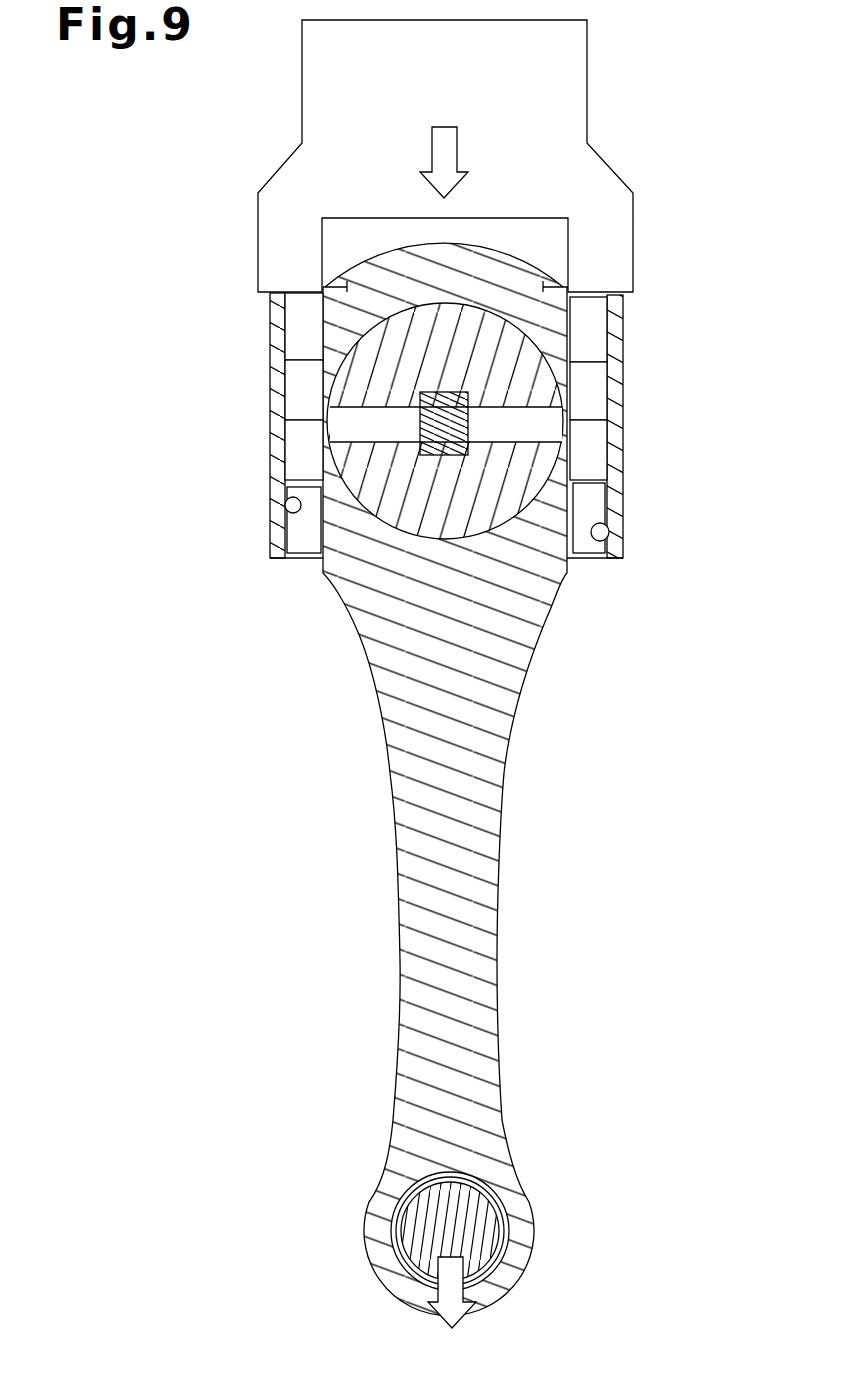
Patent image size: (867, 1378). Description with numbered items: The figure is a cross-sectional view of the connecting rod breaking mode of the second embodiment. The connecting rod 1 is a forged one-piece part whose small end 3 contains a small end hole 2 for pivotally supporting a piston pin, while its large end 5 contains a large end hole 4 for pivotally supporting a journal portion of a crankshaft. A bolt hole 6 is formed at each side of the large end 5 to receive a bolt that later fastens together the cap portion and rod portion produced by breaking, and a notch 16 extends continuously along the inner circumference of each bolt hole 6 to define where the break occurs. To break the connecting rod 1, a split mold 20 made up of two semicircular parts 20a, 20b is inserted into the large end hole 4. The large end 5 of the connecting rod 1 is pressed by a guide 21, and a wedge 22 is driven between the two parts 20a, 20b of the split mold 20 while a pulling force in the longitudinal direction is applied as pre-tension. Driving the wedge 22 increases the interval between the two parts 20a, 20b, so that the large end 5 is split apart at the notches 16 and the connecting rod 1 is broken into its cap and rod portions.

The connecting rod 1 is at (270, 323).
The small end hole 2 is at (407, 1200).
The small end 3 is at (516, 1281).
The large end hole 4 is at (522, 513).
The large end 5 is at (492, 252).
The bolt hole 6 is at (650, 531).
The notch 16 is at (590, 450).
The split mold 20 is at (705, 427).
The semicircular part 20a is at (550, 392).
The semicircular part 20b is at (527, 473).
The guide 21 is at (633, 243).
The wedge 22 is at (470, 428).